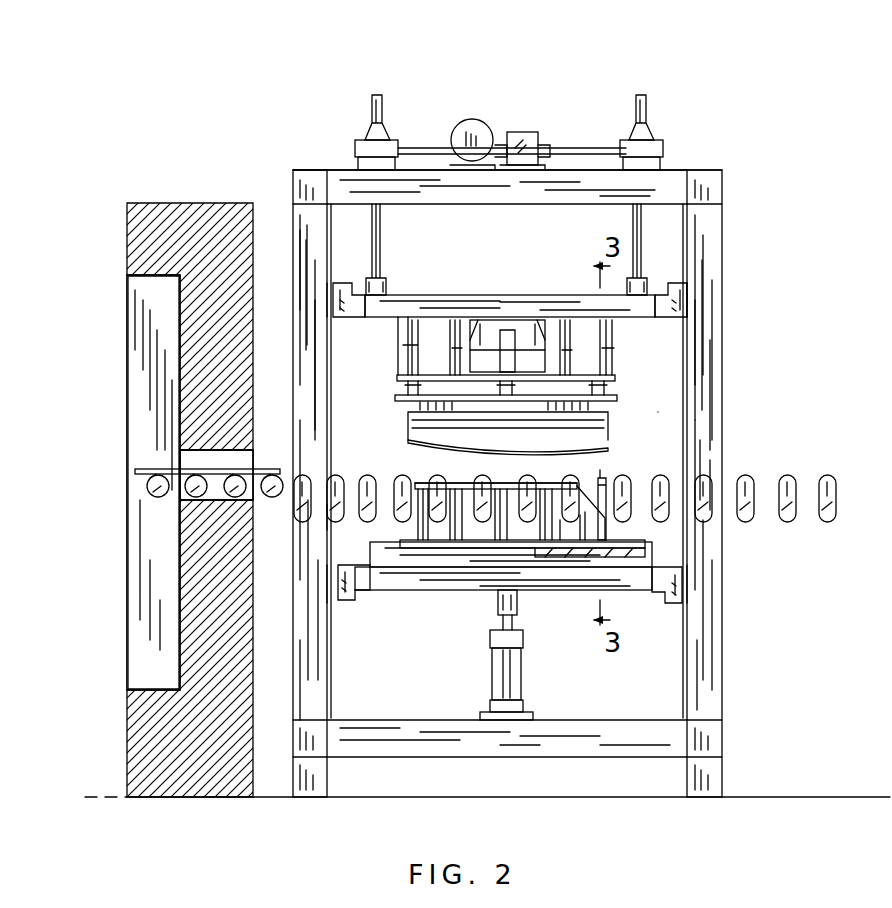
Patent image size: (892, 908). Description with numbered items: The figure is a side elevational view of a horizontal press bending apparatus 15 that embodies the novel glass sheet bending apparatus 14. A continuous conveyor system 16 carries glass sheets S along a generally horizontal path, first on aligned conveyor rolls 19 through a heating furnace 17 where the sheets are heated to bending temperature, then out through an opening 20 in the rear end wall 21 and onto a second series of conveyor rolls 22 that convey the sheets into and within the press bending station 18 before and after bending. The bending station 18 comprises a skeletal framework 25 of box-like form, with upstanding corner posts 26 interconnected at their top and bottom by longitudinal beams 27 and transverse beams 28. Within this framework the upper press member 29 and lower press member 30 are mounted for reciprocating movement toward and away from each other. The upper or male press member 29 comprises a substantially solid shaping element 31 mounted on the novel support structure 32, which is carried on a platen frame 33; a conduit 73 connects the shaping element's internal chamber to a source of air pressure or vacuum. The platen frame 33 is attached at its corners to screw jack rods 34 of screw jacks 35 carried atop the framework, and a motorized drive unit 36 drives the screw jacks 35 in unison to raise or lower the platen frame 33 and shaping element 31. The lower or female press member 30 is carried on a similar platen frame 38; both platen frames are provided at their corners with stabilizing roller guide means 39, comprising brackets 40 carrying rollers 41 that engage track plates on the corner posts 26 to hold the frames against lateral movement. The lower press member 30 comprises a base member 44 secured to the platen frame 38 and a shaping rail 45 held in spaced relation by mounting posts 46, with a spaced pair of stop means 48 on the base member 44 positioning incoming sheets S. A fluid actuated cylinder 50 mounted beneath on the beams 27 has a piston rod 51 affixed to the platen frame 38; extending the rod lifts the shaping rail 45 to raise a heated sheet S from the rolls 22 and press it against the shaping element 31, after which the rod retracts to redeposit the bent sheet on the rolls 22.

The glass sheet bending apparatus 14 is at (662, 410).
The horizontal press bending apparatus 15 is at (790, 85).
The continuous conveyor system 16 is at (300, 515).
The heating furnace 17 is at (172, 172).
The press bending station 18 is at (274, 140).
The conveyor rolls 19 is at (196, 498).
The opening 20 is at (188, 465).
The rear end wall 21 is at (180, 325).
The conveyor rolls 22 is at (300, 478).
The skeletal framework 25 is at (733, 170).
The corner posts 26 is at (305, 240).
The longitudinal beams 27 is at (497, 200).
The transverse beams 28 is at (310, 190).
The upper press member 29 is at (405, 432).
The lower press member 30 is at (410, 517).
The shaping element 31 is at (440, 440).
The support structure 32 is at (392, 377).
The platen frame 33 is at (503, 295).
The screw jack rods 34 is at (381, 242).
The screw jacks 35 is at (388, 130).
The motorized drive unit 36 is at (525, 110).
The platen frame 38 is at (448, 592).
The stabilizing roller guide means 39 is at (346, 272).
The brackets 40 is at (656, 292).
The rollers 41 is at (680, 300).
The base member 44 is at (618, 548).
The shaping rail 45 is at (505, 483).
The mounting posts 46 is at (588, 548).
The stop means 48 is at (605, 490).
The fluid actuated cylinder 50 is at (525, 680).
The piston rod 51 is at (500, 628).
The conduit 73 is at (497, 352).
The glass sheets S is at (138, 470).